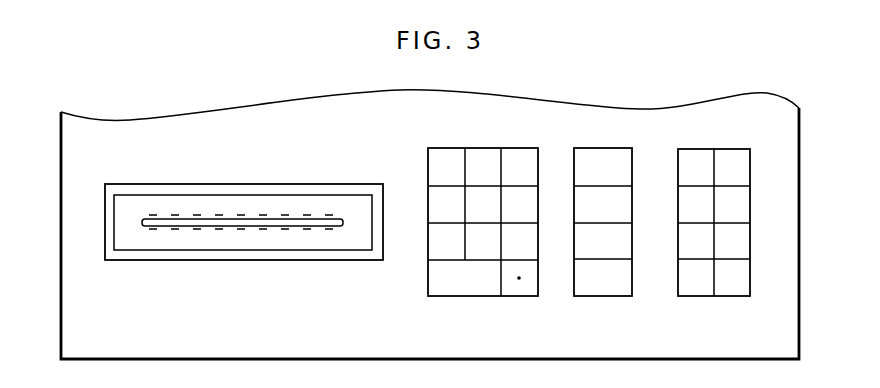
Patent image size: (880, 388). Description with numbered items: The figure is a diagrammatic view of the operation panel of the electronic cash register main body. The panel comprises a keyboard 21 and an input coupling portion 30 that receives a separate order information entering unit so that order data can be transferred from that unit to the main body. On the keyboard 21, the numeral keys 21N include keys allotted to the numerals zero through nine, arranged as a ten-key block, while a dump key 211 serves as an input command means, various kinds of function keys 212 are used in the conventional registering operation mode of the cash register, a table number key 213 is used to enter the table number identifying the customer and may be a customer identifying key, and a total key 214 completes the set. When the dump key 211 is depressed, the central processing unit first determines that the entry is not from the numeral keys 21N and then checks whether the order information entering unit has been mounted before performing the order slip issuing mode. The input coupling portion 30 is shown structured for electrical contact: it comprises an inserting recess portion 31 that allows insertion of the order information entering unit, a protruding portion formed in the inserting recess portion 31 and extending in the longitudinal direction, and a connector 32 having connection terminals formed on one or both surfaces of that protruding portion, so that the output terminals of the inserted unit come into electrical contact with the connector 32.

The keyboard 21 is at (659, 128).
The numeral keys 21N is at (470, 296).
The dump key 211 is at (628, 154).
The function keys 212 is at (697, 296).
The table number key 213 is at (628, 200).
The total key 214 is at (628, 237).
The input coupling portion 30 is at (288, 163).
The inserting recess portion 31 is at (170, 184).
The connector 32 is at (344, 222).